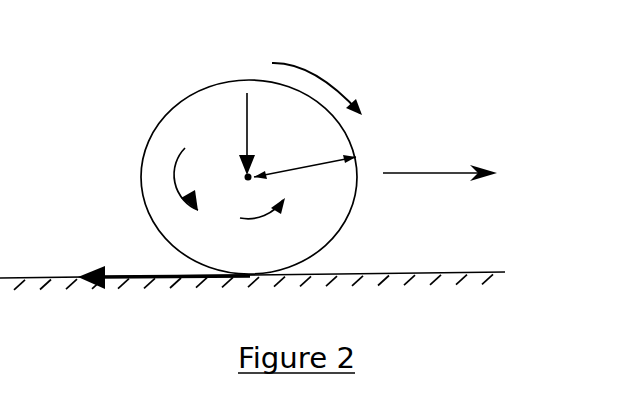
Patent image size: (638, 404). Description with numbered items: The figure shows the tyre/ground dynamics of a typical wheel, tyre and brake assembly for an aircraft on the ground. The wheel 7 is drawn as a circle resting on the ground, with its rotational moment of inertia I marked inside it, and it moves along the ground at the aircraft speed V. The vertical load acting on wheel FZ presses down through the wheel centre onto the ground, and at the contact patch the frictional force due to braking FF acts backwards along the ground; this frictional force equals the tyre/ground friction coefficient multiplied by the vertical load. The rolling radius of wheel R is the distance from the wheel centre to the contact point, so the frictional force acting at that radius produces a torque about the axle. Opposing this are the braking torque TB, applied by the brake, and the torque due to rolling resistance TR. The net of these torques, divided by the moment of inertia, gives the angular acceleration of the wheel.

The wheel 7 is at (185, 138).
The frictional force due to braking FF is at (158, 256).
The vertical load acting on wheel FZ is at (261, 134).
The rotational moment of inertia I is at (207, 120).
The braking torque TB is at (196, 179).
The torque due to rolling resistance TR is at (267, 227).
The rolling radius of wheel R is at (305, 176).
The aircraft speed V is at (440, 158).